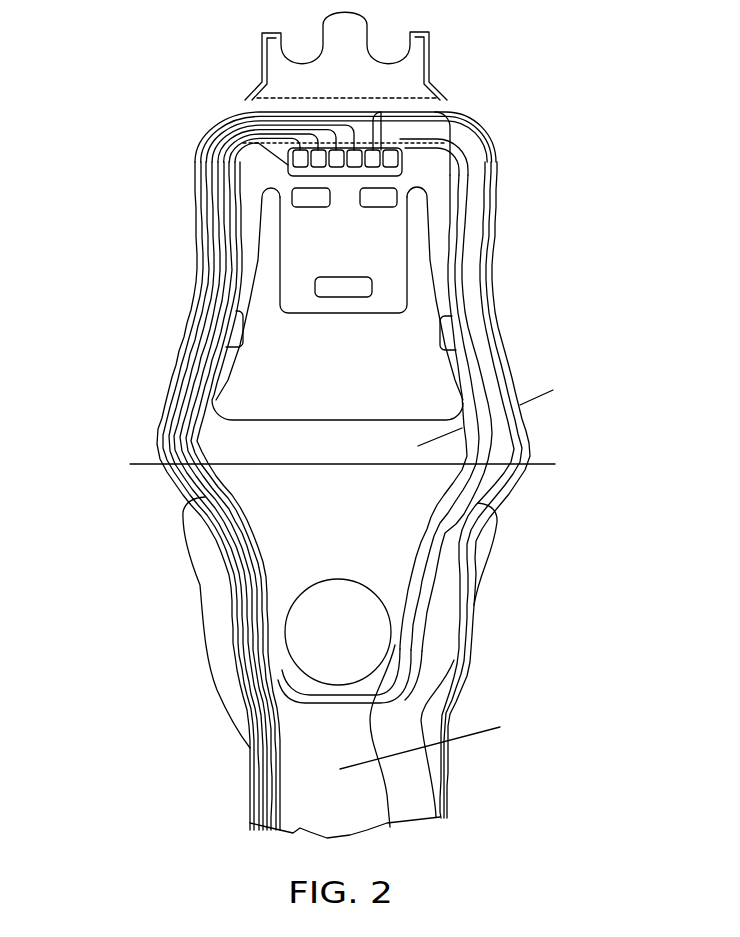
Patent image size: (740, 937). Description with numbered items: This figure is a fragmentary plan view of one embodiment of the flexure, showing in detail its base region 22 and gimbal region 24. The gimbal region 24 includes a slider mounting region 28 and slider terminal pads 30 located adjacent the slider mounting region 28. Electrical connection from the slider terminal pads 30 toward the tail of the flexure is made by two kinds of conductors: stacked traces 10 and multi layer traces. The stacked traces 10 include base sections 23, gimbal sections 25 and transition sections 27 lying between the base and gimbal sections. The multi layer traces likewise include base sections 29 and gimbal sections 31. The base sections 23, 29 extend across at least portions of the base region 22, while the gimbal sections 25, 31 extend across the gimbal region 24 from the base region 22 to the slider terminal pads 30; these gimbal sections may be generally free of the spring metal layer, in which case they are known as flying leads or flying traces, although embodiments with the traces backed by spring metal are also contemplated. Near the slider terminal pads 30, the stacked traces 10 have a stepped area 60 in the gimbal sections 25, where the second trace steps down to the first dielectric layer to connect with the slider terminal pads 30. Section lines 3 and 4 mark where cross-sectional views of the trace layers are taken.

The section line 3- 3 is at (497, 699).
The section line 4- 4 is at (553, 360).
The stacked traces 10 is at (555, 444).
The base region 22 is at (318, 797).
The base sections 23 is at (418, 787).
The gimbal region 24 is at (192, 270).
The gimbal sections 25 is at (487, 330).
The transition sections 27 is at (447, 593).
The slider mounting region 28 is at (313, 236).
The base sections 29 is at (262, 800).
The slider terminal pads 30 is at (243, 106).
The gimbal sections 31 is at (190, 343).
The stepped area 60 is at (393, 133).